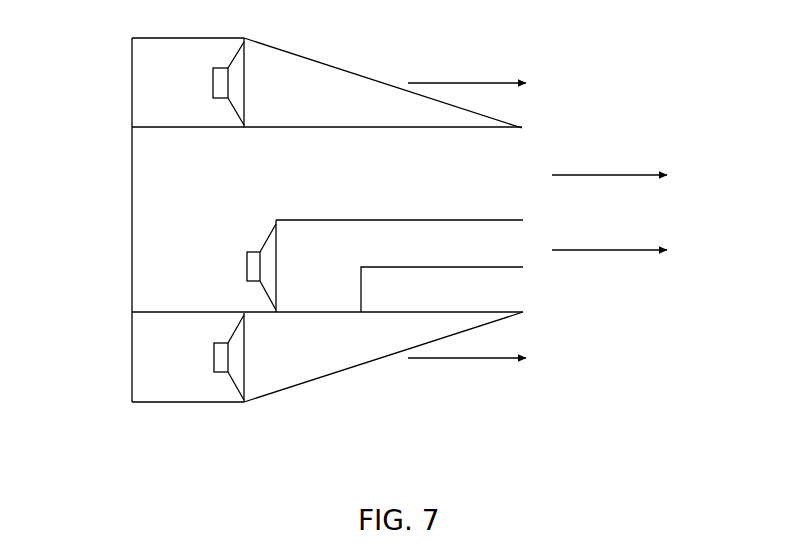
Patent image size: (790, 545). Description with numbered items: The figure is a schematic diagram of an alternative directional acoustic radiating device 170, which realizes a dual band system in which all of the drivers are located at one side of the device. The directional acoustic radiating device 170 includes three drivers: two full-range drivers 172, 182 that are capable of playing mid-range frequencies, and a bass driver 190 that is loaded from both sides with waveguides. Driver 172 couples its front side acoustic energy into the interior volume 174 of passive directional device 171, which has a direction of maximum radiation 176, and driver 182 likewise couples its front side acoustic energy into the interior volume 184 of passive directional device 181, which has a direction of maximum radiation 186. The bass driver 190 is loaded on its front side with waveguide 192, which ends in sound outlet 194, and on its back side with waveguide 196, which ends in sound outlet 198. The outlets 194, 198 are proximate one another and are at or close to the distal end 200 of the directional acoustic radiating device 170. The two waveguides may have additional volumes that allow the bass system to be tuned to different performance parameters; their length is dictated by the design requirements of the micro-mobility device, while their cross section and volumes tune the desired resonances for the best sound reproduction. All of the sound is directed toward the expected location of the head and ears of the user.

The directional acoustic radiating device 170 is at (168, 409).
The passive directional device 171 is at (358, 373).
The driver 172 is at (234, 380).
The interior volume 174 is at (288, 381).
The direction of maximum radiation 176 is at (485, 358).
The passive directional device 181 is at (341, 60).
The driver 182 is at (235, 61).
The interior volume 184 is at (255, 58).
The direction of maximum radiation 186 is at (492, 82).
The bass driver 190 is at (266, 241).
The waveguide 192 is at (330, 242).
The sound outlet 194 is at (612, 250).
The waveguide 196 is at (147, 173).
The sound outlet 198 is at (615, 175).
The distal end 200 is at (521, 107).